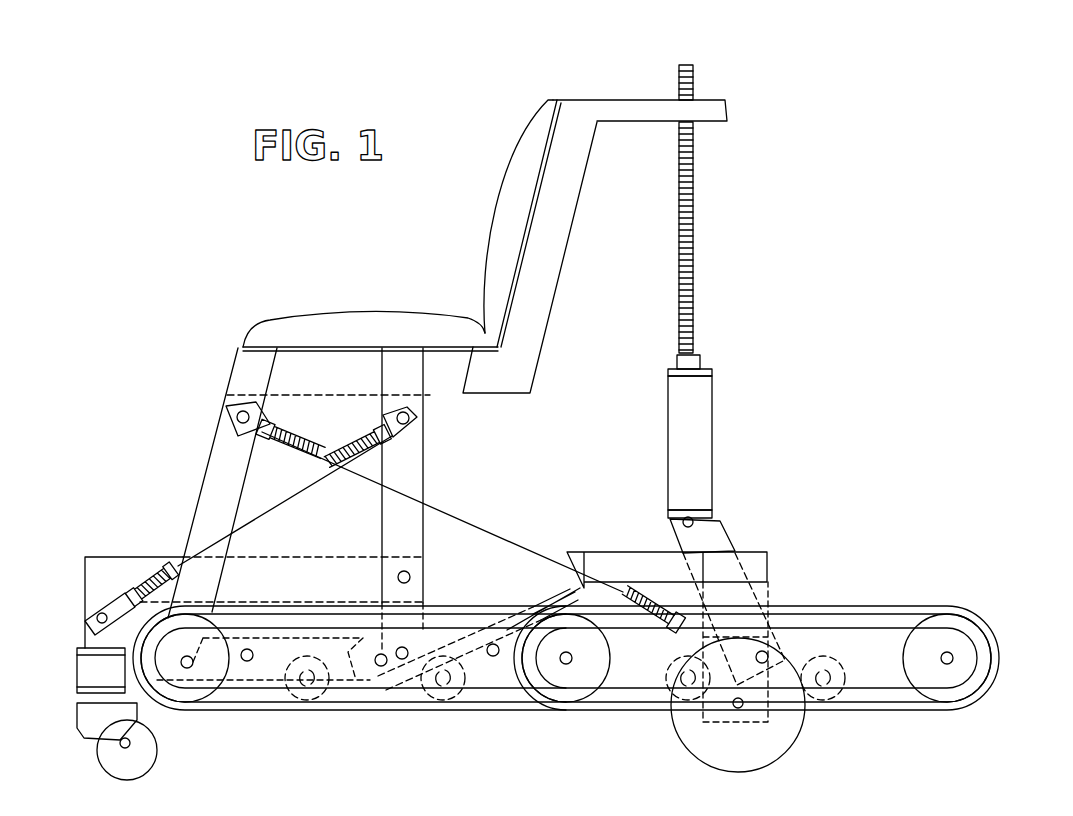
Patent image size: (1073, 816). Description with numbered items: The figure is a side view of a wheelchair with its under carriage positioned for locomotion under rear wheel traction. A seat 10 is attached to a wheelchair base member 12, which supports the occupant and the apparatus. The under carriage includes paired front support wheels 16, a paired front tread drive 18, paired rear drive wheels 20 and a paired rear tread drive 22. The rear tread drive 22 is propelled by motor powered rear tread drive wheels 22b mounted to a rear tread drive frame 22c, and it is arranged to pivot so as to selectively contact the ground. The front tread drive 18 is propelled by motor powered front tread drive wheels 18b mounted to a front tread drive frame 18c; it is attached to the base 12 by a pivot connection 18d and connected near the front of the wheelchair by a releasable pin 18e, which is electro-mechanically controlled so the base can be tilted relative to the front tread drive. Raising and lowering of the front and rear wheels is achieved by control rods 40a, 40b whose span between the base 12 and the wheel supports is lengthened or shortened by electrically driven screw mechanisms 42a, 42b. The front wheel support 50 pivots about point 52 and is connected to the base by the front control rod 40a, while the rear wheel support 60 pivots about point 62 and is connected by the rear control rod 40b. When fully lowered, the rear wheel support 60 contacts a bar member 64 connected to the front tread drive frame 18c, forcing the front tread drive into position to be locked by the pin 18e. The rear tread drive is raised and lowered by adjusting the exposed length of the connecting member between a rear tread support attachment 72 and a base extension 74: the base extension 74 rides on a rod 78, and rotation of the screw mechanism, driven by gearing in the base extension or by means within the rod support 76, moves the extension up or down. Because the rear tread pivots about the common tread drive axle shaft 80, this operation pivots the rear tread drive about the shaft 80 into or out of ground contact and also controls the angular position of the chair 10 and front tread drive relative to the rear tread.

The seat 10 is at (258, 320).
The wheelchair base member 12 is at (255, 372).
The front support wheels 16 is at (140, 752).
The front tread drive 18 is at (262, 710).
The front tread drive wheels 18b is at (186, 697).
The front tread drive frame 18c is at (273, 693).
The pivot connection 18d is at (403, 660).
The releasable pin 18e is at (246, 662).
The rear drive wheels 20 is at (785, 725).
The rear tread drive 22 is at (930, 712).
The rear tread drive wheels 22b is at (952, 620).
The rear tread drive frame 22c is at (952, 668).
The front control rod 40a is at (260, 500).
The rear control rod 40b is at (505, 532).
The electrically driven screw mechanism 42a is at (420, 428).
The electrically driven screw mechanism 42b is at (232, 428).
The front wheel support 50 is at (104, 570).
The pivot point 52 is at (411, 577).
The rear wheel support 60 is at (610, 570).
The pivot point 62 is at (380, 666).
The bar member 64 is at (496, 656).
The rear tread support attachment 72 is at (705, 532).
The base extension 74 is at (715, 100).
The rod support 76 is at (698, 413).
The rod 78 is at (694, 68).
The common tread drive axle shaft 80 is at (570, 665).